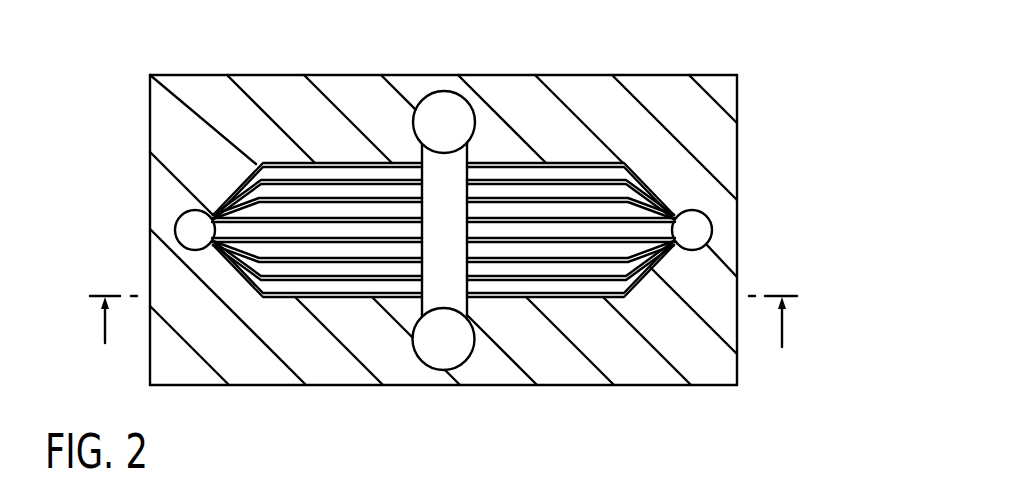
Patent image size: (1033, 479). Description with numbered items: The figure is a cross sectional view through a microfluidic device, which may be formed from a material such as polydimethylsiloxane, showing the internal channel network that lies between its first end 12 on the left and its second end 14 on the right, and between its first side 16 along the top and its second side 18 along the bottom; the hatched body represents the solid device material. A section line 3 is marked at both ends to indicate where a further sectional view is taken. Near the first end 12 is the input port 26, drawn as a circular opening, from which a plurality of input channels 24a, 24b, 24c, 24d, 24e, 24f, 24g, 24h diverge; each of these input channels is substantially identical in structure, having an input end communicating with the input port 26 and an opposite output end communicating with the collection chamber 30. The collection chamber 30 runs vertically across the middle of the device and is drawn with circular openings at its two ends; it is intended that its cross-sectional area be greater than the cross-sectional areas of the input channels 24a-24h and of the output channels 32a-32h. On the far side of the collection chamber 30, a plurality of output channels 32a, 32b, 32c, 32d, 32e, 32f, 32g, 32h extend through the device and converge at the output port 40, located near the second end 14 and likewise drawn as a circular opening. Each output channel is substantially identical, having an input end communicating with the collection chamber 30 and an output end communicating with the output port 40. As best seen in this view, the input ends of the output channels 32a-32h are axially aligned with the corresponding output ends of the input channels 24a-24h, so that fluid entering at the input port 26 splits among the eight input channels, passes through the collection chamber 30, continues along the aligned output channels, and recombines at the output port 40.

The section line 3- 3 is at (443, 336).
The first end 12 is at (150, 252).
The second end 14 is at (737, 222).
The first side 16 is at (272, 75).
The second side 18 is at (330, 386).
The input channel 24a is at (273, 298).
The input channel 24b is at (305, 281).
The input channel 24c is at (363, 263).
The input channel 24d is at (392, 243).
The input channel 24e is at (260, 217).
The input channel 24f is at (293, 197).
The input channel 24g is at (348, 180).
The input channel 24h is at (367, 161).
The input port 26 is at (180, 215).
The collection chamber 30 is at (474, 156).
The output channel 32a is at (647, 287).
The output channel 32b is at (614, 281).
The output channel 32c is at (548, 263).
The output channel 32d is at (516, 243).
The output channel 32e is at (645, 190).
The output channel 32f is at (605, 198).
The output channel 32g is at (568, 180).
The output channel 32h is at (505, 162).
The output port 40 is at (720, 246).